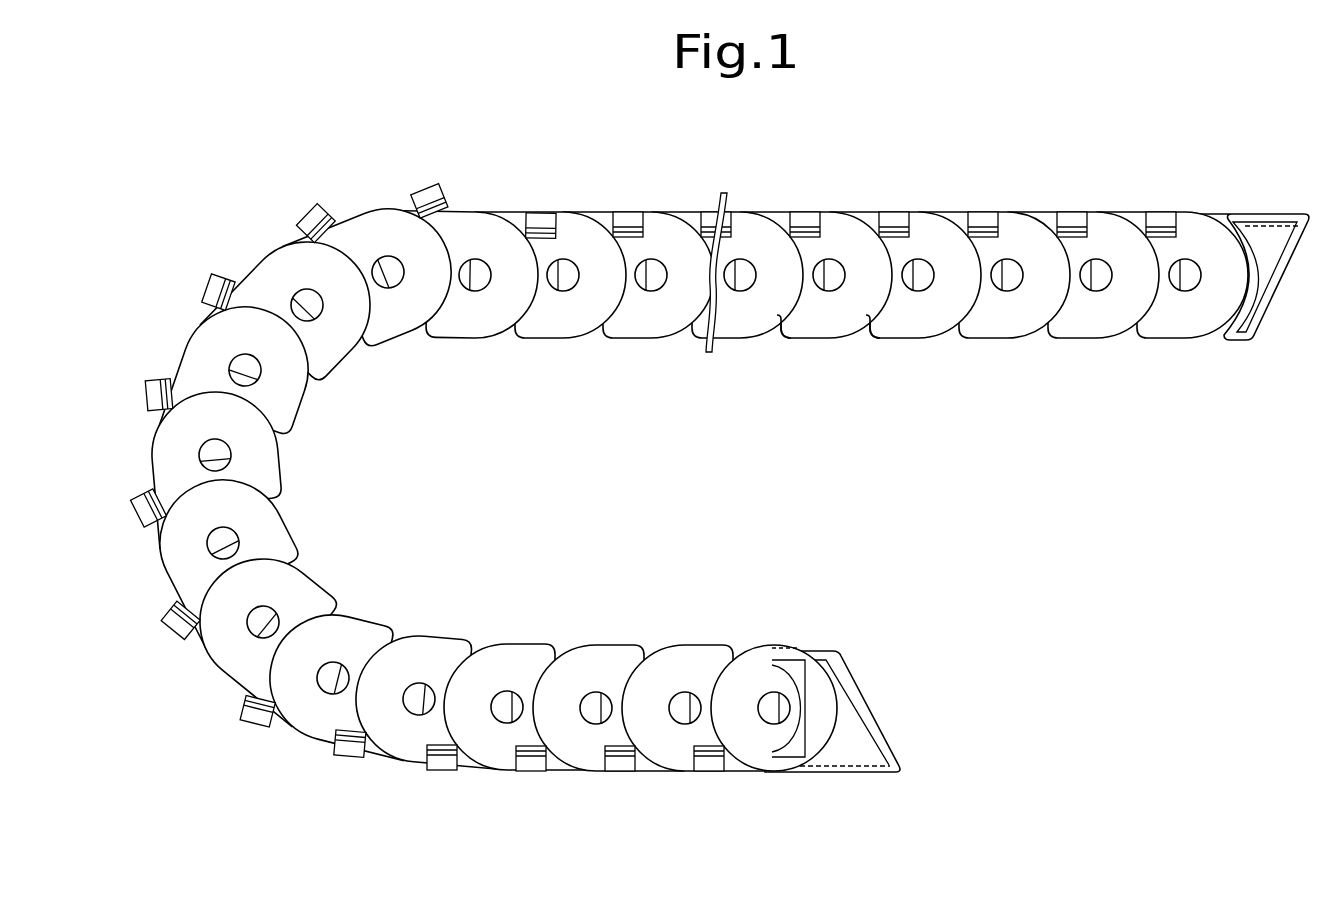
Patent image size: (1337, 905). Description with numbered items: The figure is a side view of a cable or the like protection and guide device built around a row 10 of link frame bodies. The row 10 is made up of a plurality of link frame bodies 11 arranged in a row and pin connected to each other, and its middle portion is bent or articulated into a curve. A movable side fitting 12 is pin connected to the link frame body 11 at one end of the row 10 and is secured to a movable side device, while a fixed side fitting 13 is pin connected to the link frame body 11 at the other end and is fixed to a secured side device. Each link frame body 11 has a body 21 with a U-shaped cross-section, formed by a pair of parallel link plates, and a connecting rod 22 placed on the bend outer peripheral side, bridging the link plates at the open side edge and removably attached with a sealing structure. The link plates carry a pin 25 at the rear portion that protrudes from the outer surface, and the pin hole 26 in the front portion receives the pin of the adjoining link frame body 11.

The row of link frame bodies 10 is at (720, 479).
The link frame body 11 is at (843, 338).
The movable side fitting 12 is at (1237, 213).
The fixed side fitting 13 is at (810, 773).
The body 21 is at (800, 330).
The connecting rod 22 is at (801, 212).
The pin 25 is at (934, 272).
The pin hole 26 is at (831, 291).